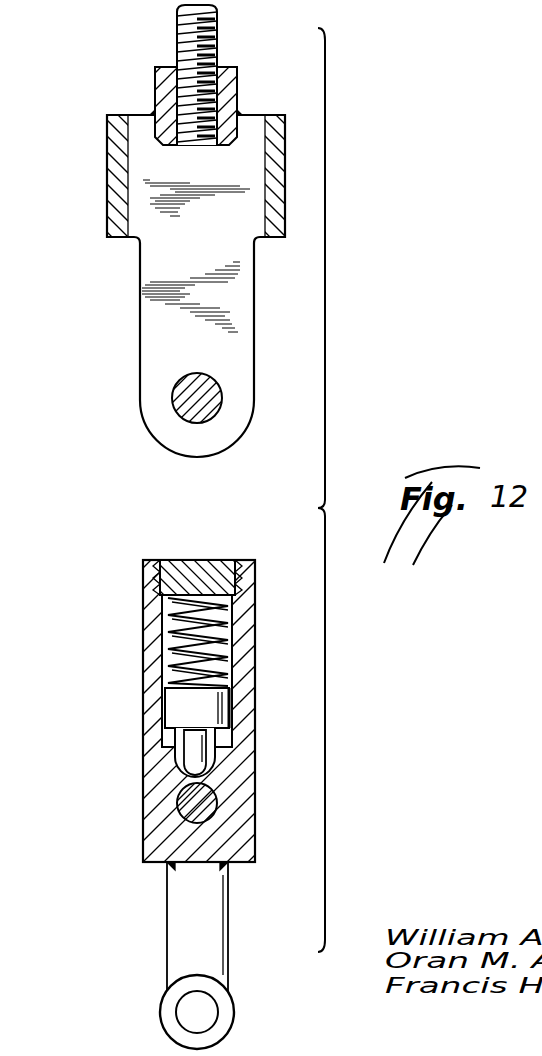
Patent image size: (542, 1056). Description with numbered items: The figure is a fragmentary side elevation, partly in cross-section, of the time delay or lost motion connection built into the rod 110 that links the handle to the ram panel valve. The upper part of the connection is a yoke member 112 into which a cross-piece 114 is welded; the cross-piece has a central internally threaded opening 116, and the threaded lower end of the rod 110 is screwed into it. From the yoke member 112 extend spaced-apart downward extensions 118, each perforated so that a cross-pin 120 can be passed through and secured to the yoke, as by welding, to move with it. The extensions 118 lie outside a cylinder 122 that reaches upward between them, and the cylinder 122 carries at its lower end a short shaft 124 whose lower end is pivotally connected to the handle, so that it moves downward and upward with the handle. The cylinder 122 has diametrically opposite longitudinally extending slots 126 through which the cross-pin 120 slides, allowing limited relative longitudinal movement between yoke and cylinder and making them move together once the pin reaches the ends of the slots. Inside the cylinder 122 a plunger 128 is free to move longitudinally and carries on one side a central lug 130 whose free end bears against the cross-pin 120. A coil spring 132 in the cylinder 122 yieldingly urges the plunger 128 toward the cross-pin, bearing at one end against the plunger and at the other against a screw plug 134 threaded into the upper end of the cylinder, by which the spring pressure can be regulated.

The rod 110 is at (217, 20).
The yoke member 112 is at (107, 172).
The cross-piece 114 is at (228, 100).
The internally threaded opening 116 is at (237, 82).
The downward extensions 118 is at (155, 300).
The cross-pin 120 is at (178, 401).
The cylinder 122 is at (143, 612).
The short shaft 124 is at (178, 928).
The longitudinally extending slots 126 is at (175, 766).
The plunger 128 is at (168, 703).
The lug 130 is at (208, 765).
The coil spring 132 is at (172, 645).
The screw plug 134 is at (197, 560).